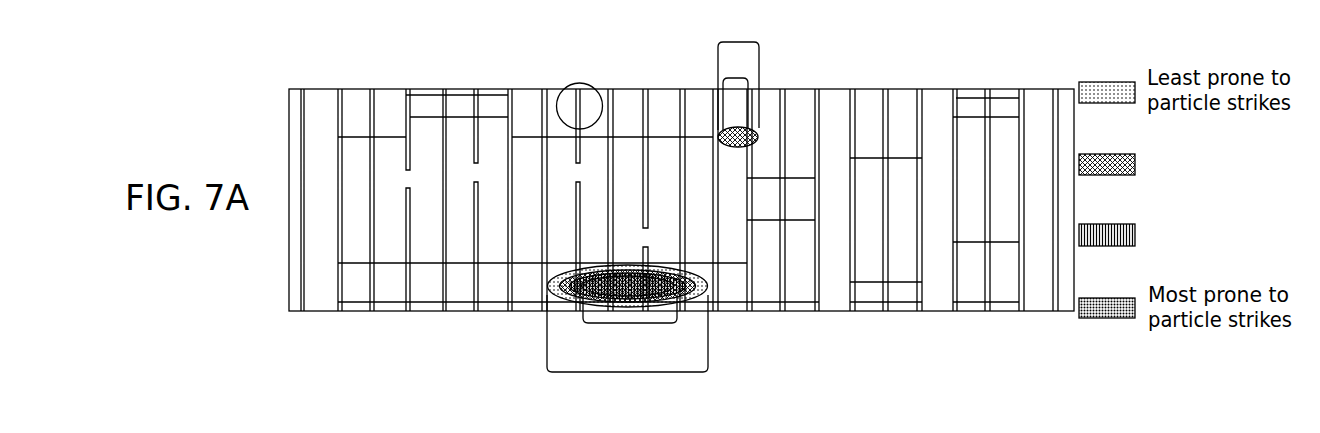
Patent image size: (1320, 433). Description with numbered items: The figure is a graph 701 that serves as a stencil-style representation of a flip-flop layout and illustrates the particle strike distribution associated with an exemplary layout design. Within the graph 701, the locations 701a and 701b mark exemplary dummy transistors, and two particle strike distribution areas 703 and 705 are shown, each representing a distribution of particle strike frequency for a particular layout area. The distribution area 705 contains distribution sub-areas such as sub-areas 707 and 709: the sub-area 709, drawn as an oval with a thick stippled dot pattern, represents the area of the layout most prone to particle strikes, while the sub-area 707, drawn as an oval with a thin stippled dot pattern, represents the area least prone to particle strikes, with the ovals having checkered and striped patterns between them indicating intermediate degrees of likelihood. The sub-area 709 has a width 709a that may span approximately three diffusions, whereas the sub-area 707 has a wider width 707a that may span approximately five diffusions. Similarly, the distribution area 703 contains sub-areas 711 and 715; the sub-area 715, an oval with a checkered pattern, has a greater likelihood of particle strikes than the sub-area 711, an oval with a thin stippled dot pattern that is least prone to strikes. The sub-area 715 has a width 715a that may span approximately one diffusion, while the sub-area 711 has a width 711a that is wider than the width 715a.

The graph 701 is at (1073, 40).
The location of dummy transistor 701a is at (572, 83).
The location of dummy transistor 701b is at (650, 306).
The particle strike distribution area 703 is at (783, 33).
The particle strike distribution area 705 is at (742, 361).
The distribution sub-area 707 is at (703, 289).
The width of sub-area 707 707a is at (628, 372).
The distribution sub-area 709 is at (595, 266).
The width of sub-area 709 709a is at (628, 323).
The distribution sub-area 711 is at (759, 137).
The width of sub-area 711 711a is at (739, 42).
The distribution sub-area 715 is at (734, 128).
The width of sub-area 715 715a is at (737, 78).